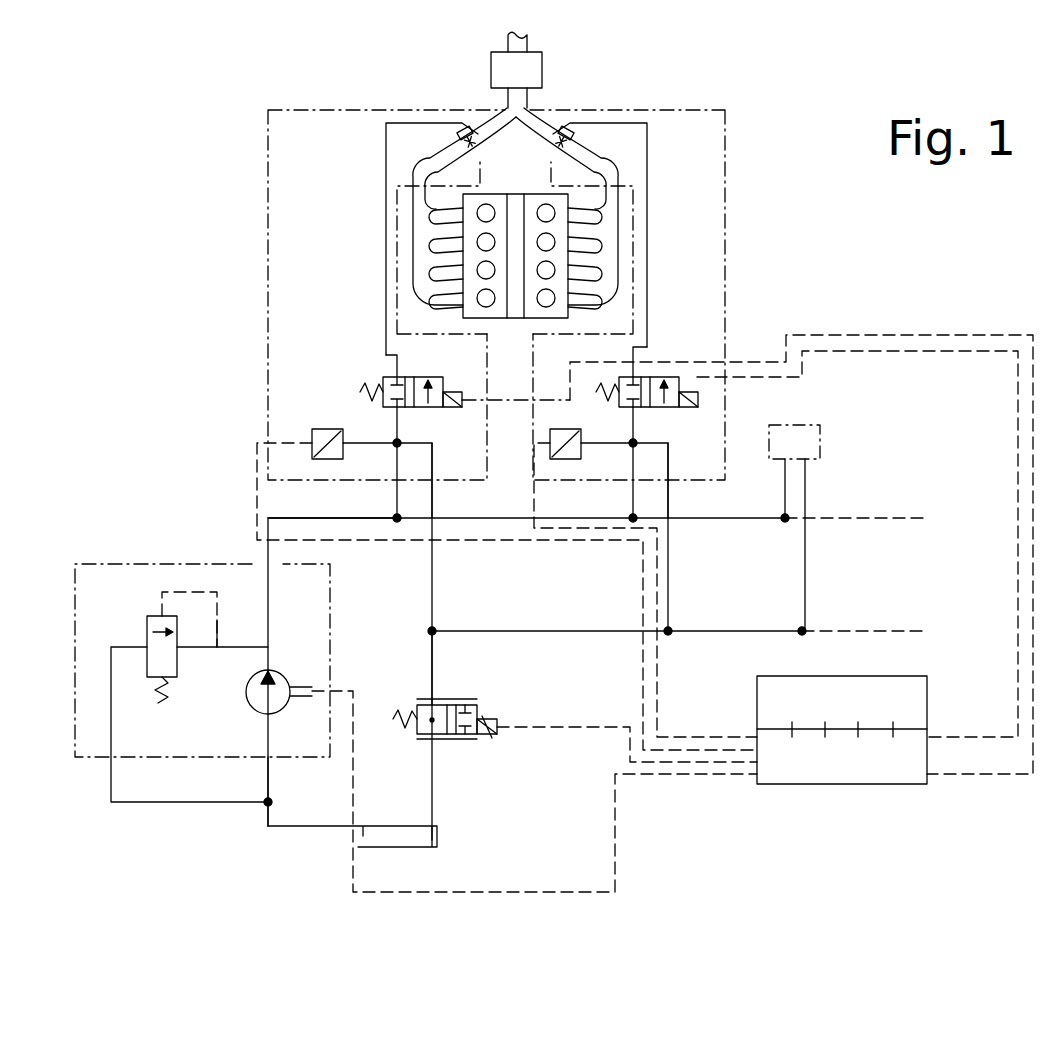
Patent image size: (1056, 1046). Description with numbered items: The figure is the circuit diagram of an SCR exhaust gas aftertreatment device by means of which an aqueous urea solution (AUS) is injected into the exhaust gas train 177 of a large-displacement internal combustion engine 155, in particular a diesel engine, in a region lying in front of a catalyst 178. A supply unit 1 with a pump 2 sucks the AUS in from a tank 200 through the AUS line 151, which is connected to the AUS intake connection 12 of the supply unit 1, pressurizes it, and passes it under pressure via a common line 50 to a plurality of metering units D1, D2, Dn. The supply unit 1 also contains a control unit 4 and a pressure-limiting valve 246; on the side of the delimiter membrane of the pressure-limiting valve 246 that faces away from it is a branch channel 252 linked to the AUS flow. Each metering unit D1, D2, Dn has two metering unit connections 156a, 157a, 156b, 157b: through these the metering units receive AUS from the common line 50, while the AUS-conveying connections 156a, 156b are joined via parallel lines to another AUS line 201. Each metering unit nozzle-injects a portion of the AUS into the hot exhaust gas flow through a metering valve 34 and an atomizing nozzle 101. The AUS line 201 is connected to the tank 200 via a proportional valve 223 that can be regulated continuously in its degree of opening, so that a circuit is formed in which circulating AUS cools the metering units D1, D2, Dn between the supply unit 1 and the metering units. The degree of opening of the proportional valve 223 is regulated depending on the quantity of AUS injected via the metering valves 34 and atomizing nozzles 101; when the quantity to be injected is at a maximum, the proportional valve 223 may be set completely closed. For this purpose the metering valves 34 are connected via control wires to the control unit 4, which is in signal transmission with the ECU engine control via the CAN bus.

The supply unit 1 is at (312, 645).
The pump 2 is at (296, 672).
The control unit 4 is at (842, 730).
The AUS intake connection 12 is at (268, 775).
The metering valve 34 is at (382, 379).
The common line 50 is at (350, 522).
The atomizing nozzle 101 is at (456, 133).
The AUS line 151 is at (268, 783).
The internal combustion engine 155 is at (525, 147).
The metering unit connection 156a is at (432, 498).
The metering unit connection 156b is at (670, 498).
The metering unit connection 157a is at (397, 498).
The metering unit connection 157b is at (633, 498).
The exhaust gas train 177 is at (529, 119).
The catalyst 178 is at (516, 60).
The tank 200 is at (397, 847).
The AUS line 201 is at (434, 668).
The proportional valve 223 is at (450, 744).
The pressure-limiting valve 246 is at (183, 682).
The branch channel 252 is at (242, 647).
The metering unit D1 is at (268, 393).
The metering unit D2 is at (725, 393).
The metering unit Dn is at (794, 442).
The ECU engine control ECU is at (920, 700).